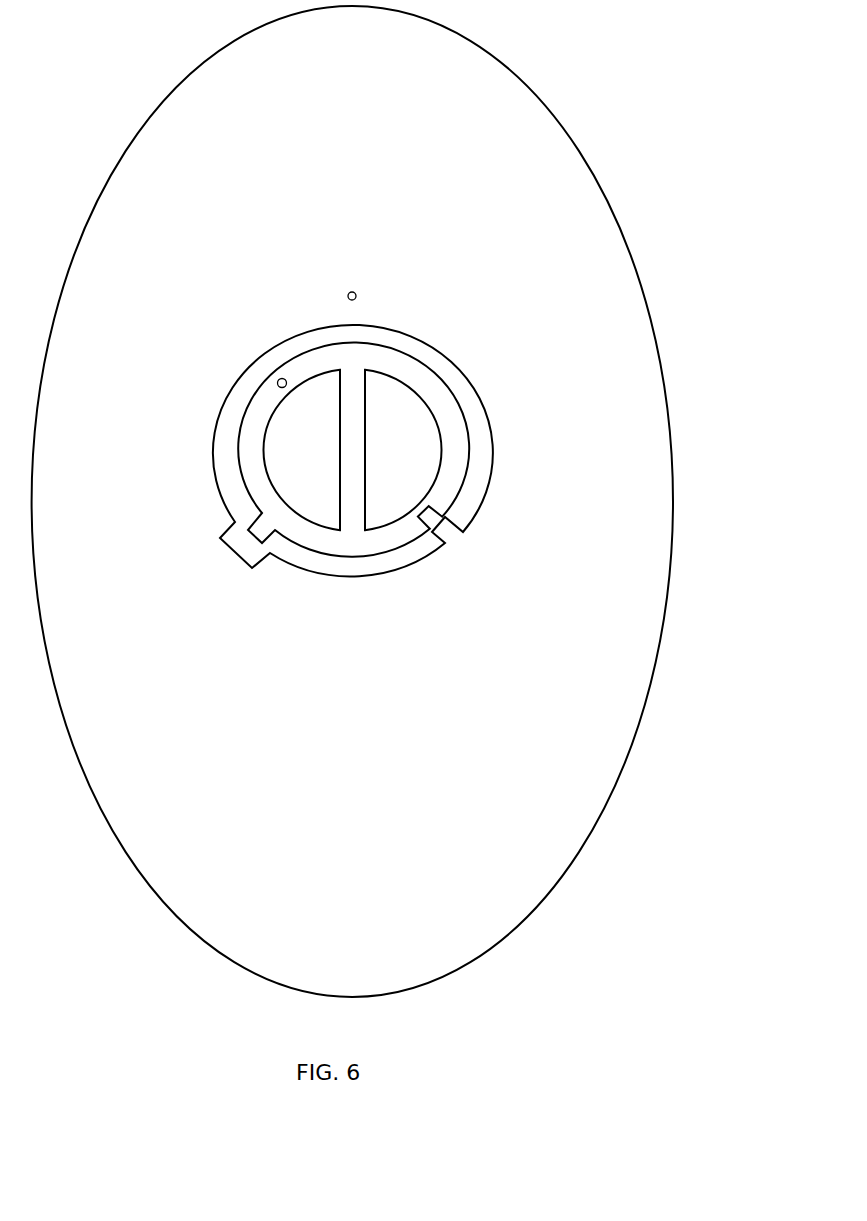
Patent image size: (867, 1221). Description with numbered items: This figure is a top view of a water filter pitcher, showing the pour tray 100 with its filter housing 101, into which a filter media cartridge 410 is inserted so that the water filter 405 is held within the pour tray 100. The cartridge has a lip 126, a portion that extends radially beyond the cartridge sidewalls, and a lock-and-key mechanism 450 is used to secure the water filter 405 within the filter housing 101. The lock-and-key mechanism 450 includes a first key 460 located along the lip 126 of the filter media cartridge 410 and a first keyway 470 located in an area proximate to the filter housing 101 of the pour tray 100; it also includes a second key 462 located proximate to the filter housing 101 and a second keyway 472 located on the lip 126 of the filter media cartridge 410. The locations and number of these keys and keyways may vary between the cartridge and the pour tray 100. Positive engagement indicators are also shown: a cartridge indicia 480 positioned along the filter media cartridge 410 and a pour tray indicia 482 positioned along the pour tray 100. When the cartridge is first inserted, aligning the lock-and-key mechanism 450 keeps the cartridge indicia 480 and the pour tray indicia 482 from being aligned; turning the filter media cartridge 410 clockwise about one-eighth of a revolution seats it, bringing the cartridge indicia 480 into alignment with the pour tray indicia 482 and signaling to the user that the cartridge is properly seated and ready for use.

The pour tray 100 is at (373, 501).
The filter housing 101 is at (292, 330).
The lip 126 is at (476, 442).
The water filter 405 is at (392, 364).
The filter media cartridge 410 is at (432, 391).
The lock-and-key mechanism 450 is at (355, 490).
The first key 460 is at (252, 536).
The second key 462 is at (452, 538).
The first keyway 470 is at (254, 569).
The second keyway 472 is at (450, 487).
The cartridge indicia 480 is at (277, 383).
The pour tray indicia 482 is at (350, 292).